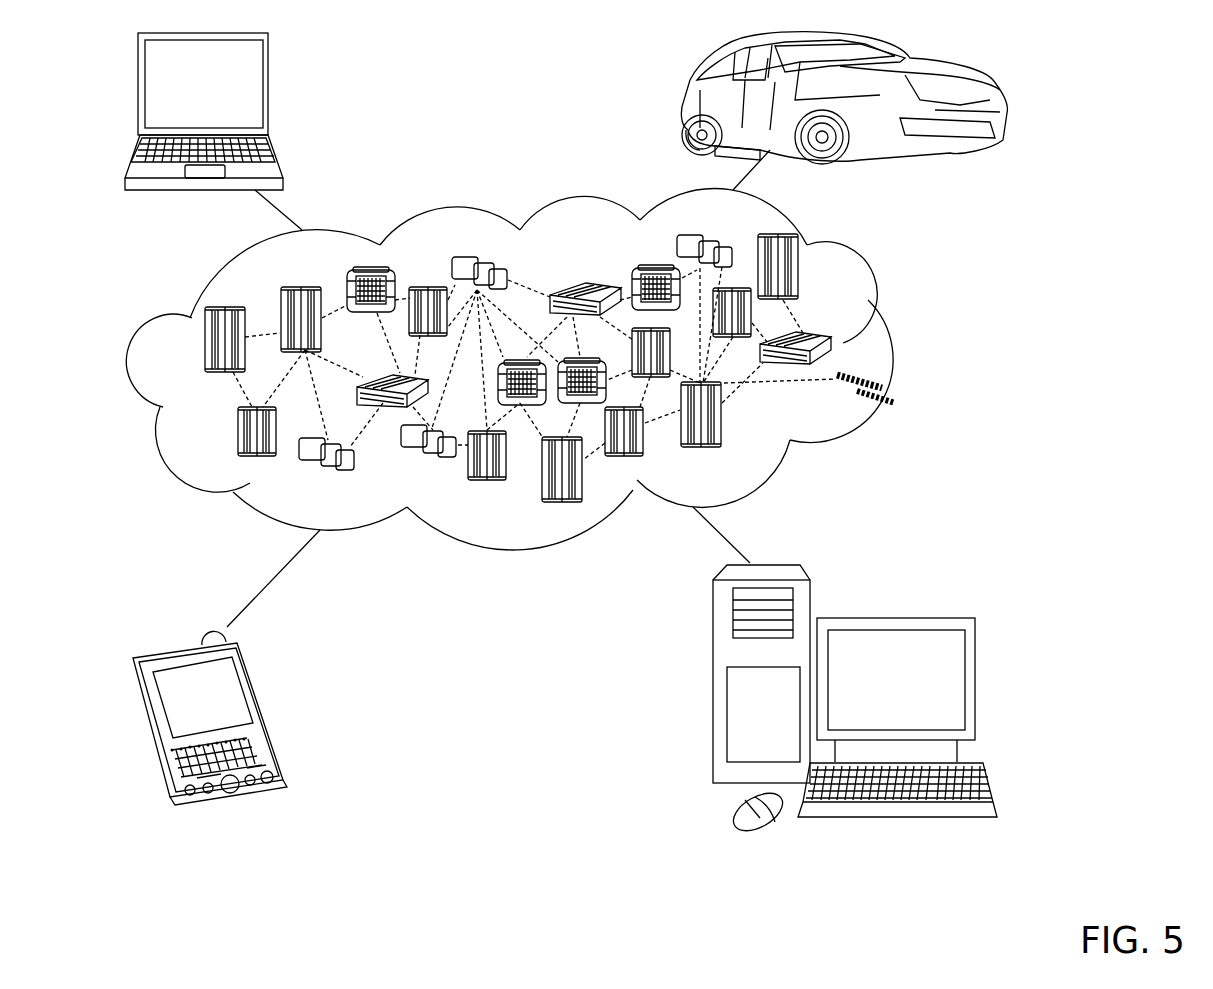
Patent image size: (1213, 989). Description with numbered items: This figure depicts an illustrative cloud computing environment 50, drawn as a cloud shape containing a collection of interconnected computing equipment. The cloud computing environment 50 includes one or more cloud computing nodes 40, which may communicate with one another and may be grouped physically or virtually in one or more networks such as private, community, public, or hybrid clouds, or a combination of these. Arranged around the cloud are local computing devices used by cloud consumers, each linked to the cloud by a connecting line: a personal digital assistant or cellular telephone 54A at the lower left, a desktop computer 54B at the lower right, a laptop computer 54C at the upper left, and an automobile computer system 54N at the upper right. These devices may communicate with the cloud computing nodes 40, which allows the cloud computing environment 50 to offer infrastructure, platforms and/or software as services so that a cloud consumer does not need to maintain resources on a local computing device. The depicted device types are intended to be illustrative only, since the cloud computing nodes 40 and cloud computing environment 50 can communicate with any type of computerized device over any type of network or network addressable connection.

The laptop computer 54C is at (268, 88).
The automobile computer system 54N is at (683, 103).
The cloud computing environment 50 is at (845, 343).
The cloud computing nodes 40 is at (885, 397).
The personal digital assistant (PDA) or cellular telephone 54A is at (263, 712).
The desktop computer 54B is at (893, 618).